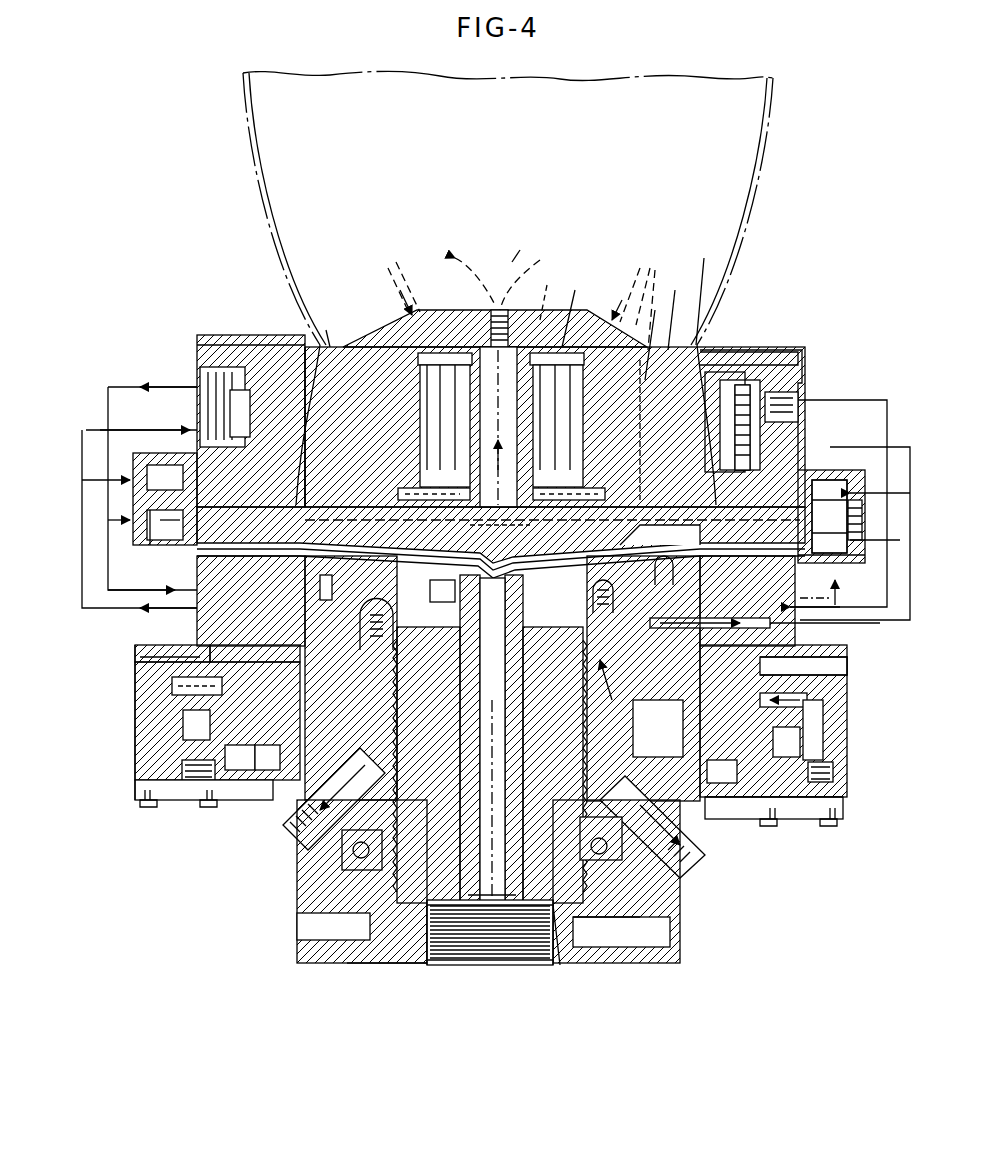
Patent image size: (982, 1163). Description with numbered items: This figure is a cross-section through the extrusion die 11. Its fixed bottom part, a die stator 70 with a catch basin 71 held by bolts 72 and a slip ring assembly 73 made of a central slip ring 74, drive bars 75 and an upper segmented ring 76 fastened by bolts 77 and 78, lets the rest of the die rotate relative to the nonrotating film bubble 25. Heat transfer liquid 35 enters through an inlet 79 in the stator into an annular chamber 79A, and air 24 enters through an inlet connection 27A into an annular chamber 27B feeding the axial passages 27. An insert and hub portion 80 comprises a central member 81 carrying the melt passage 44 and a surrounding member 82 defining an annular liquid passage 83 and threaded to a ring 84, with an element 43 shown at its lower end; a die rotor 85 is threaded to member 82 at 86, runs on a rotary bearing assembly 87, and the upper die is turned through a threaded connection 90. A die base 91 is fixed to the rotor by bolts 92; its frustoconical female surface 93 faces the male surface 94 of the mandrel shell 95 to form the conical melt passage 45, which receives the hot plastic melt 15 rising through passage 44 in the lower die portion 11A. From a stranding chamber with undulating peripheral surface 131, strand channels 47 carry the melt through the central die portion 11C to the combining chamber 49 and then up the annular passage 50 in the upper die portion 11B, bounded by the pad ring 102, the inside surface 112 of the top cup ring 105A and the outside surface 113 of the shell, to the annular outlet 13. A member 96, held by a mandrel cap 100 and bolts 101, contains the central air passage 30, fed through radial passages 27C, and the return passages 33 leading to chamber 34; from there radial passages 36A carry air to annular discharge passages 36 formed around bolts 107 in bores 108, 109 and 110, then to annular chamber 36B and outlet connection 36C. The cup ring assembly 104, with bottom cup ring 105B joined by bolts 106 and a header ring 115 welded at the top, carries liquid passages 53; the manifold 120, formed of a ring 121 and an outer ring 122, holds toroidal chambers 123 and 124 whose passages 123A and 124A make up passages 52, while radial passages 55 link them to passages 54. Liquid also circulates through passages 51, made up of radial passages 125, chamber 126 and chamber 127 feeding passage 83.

The extrusion die 11 is at (116, 285).
The lower portion of die 11A is at (92, 620).
The upper portion of die 11B is at (175, 357).
The central portion of die 11C is at (70, 493).
The annular outlet 13 is at (310, 345).
The plastic melt 15 is at (372, 970).
The air 24 is at (540, 258).
The film bubble 25 is at (778, 160).
The circumferentially spaced passages 27 is at (823, 718).
The inlet connection 27A is at (815, 782).
The annular chamber 27B is at (808, 700).
The radial passages 27C is at (548, 520).
The central cylindrical passage 30 is at (470, 340).
The passages 33 is at (581, 300).
The annular chamber 34 is at (615, 462).
The heat transfer liquid 35 is at (300, 850).
The air discharge passages 36 is at (848, 663).
The radially extending air discharge passages 36A is at (501, 447).
The annular chamber 36B is at (790, 743).
The outlet connection 36C is at (203, 780).
The rod end 43 is at (500, 905).
The cylindrical passage 44 is at (480, 905).
The annular conically extending passage 45 is at (790, 625).
The strand channels 47 is at (855, 500).
The combining chamber 49 is at (662, 470).
The annular cylindrical passage 50 is at (678, 303).
The passages 51 is at (455, 738).
The interconnected passages 52 is at (125, 508).
The interconnected passages 53 is at (745, 352).
The interconnected passages 54 is at (637, 297).
The radial passages 55 is at (610, 480).
The die stator 70 is at (665, 895).
The catch basin 71 is at (670, 935).
The bolts 72 is at (297, 922).
The slip ring assembly 73 is at (112, 735).
The central slip ring 74 is at (150, 740).
The drive bars 75 is at (165, 795).
The upper segmented ring 76 is at (135, 655).
The bolts 77 is at (140, 798).
The bolts 78 is at (158, 645).
The inlet 79 is at (690, 870).
The annular chamber 79A is at (685, 752).
The insert and hub portion 80 is at (540, 920).
The central member 81 is at (455, 930).
The member 82 is at (430, 930).
The annular cylindrical passage 83 is at (555, 940).
The ring 84 is at (615, 905).
The die rotor 85 is at (230, 772).
The threaded fastening 86 is at (268, 772).
The rotary bearing assembly 87 is at (340, 845).
The threaded connection 90 is at (545, 920).
The die base 91 is at (805, 555).
The bolts 92 is at (493, 580).
The frustoconical female surface 93 is at (493, 630).
The frustoconical male surface 94 is at (500, 529).
The mandrel shell 95 is at (652, 332).
The member 96 is at (549, 289).
The mandrel cap 100 is at (430, 340).
The threaded bolts 101 is at (345, 347).
The pad ring 102 is at (725, 372).
The cup ring assembly 104 is at (822, 350).
The top cup ring 105A is at (790, 392).
The bottom cup ring 105B is at (815, 470).
The bolts 106 is at (748, 385).
The bolts 107 is at (722, 783).
The bore 108 is at (770, 805).
The bore 109 is at (659, 549).
The bore 110 is at (830, 480).
The inside cylindrical surface 112 is at (713, 285).
The outside cylindrical surface 113 is at (322, 345).
The header ring 115 is at (200, 342).
The manifold 120 is at (125, 455).
The ring 121 is at (180, 545).
The outer cylindrical ring 122 is at (143, 551).
The toroidal chamber 123 is at (150, 450).
The passage 123A is at (910, 460).
The toroidal chamber 124 is at (160, 522).
The passage 124A is at (845, 573).
The radially inwardly directed passages 125 is at (430, 640).
The annular chamber 126 is at (841, 636).
The chamber 127 is at (455, 620).
The undulating peripheral surface 131 is at (297, 347).